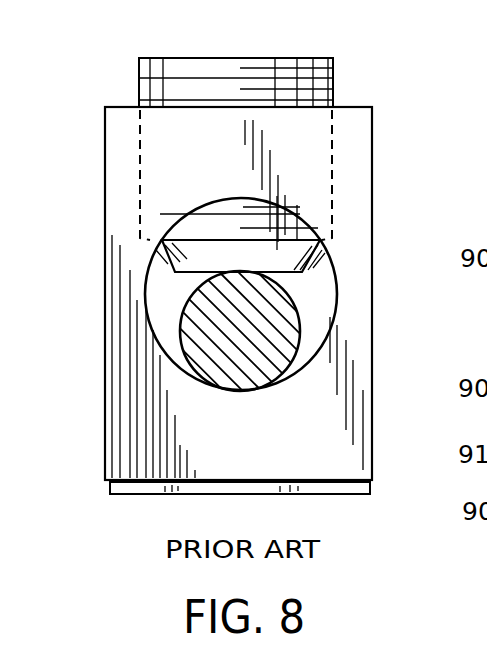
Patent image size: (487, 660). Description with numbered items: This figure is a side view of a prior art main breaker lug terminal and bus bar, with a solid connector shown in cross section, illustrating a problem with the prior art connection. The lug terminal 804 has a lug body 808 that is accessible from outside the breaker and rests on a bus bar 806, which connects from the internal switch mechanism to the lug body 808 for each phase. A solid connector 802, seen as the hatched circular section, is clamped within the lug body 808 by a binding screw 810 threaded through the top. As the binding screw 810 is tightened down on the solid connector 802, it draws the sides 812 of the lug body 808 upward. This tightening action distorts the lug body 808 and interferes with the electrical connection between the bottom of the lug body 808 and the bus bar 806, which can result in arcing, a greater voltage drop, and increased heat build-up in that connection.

The solid connector 802 is at (207, 340).
The lug terminal 804 is at (127, 236).
The bus bar 806 is at (130, 488).
The lug body 808 is at (353, 187).
The binding screw 810 is at (305, 82).
The sides of the lug body 812 is at (127, 313).